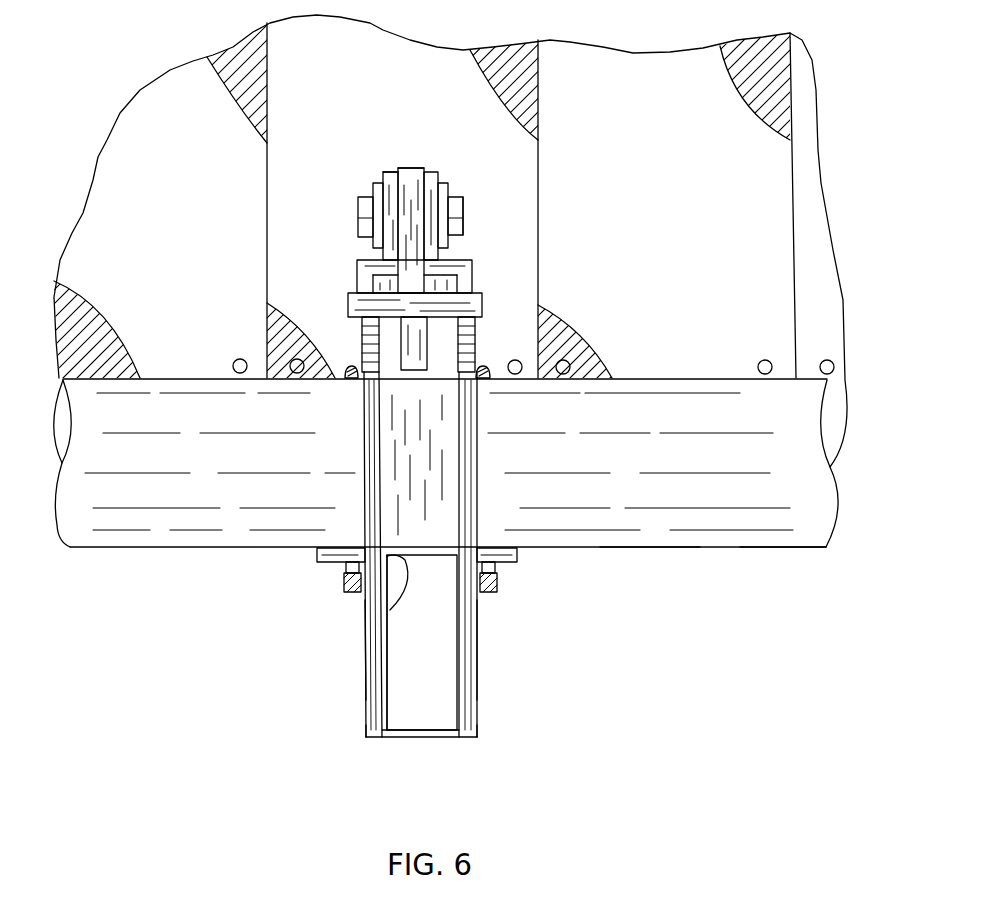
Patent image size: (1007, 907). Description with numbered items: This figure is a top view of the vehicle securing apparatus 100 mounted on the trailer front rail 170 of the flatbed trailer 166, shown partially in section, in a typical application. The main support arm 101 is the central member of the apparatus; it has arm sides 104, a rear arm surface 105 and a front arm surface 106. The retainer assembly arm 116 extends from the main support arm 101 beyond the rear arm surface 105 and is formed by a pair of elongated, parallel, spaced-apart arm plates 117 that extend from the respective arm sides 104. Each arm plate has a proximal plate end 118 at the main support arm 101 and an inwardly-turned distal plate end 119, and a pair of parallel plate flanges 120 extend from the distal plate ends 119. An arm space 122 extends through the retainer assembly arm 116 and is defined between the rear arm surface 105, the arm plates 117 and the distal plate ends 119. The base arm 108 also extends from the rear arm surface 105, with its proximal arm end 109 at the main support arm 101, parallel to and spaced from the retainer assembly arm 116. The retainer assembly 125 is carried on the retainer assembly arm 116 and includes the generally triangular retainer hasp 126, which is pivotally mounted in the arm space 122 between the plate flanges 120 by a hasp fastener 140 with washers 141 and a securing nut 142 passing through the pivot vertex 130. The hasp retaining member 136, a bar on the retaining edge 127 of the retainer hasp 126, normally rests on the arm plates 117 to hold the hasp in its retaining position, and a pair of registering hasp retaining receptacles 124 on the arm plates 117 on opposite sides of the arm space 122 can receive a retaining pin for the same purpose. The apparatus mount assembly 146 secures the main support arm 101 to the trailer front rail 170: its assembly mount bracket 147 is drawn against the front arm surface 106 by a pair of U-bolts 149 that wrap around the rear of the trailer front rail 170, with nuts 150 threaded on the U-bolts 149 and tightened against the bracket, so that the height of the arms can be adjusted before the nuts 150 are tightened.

The vehicle securing apparatus 100 is at (250, 708).
The main support arm 101 is at (431, 748).
The arm sides 104 is at (365, 652).
The rear arm surface 105 is at (447, 547).
The front arm surface 106 is at (458, 747).
The base arm 108 is at (350, 412).
The proximal arm end 109 is at (382, 608).
The retainer assembly arm 116 is at (416, 637).
The arm plates 117 is at (352, 491).
The proximal plate ends 118 is at (345, 716).
The distal plate ends 119 is at (357, 275).
The plate flanges 120 is at (368, 178).
The arm space 122 is at (445, 432).
The hasp retaining receptacles 124 is at (362, 335).
The retainer assembly 125 is at (386, 125).
The retainer hasp 126 is at (412, 150).
The retaining edge 127 is at (432, 176).
The pivot vertex 130 is at (420, 167).
The hasp retaining member 136 is at (348, 297).
The hasp fastener 140 is at (358, 215).
The washers 141 is at (365, 185).
The securing nut 142 is at (463, 203).
The apparatus mount assembly 146 is at (258, 602).
The assembly mount bracket 147 is at (508, 555).
The U-bolts 149 is at (352, 322).
The nuts 150 is at (348, 565).
The flatbed trailer 166 is at (775, 560).
The trailer front rail 170 is at (646, 533).